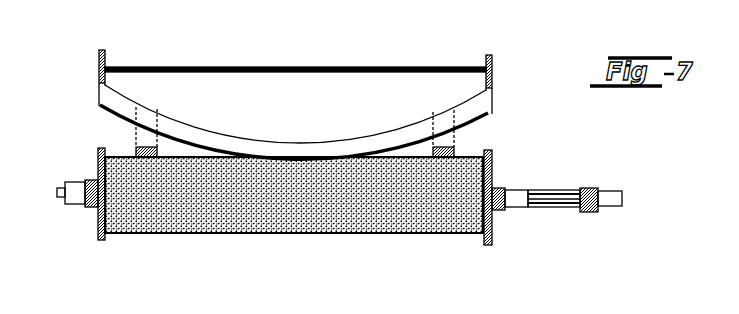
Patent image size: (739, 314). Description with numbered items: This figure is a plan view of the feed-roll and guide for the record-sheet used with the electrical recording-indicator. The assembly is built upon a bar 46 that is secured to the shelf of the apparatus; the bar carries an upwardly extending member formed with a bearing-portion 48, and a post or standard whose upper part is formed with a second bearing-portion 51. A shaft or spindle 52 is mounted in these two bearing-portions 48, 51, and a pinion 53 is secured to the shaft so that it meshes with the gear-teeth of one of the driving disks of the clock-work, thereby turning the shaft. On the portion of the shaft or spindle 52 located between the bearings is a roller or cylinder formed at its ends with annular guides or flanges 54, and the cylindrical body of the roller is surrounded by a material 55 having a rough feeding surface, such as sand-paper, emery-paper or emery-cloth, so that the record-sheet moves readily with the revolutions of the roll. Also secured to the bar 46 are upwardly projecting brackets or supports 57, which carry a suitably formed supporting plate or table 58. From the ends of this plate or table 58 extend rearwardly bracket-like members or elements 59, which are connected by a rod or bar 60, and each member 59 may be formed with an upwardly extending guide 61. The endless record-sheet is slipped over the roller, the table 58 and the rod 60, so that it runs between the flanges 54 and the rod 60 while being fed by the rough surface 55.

The bar 46 is at (607, 203).
The bearing-portion 48 is at (78, 200).
The bearing-portion 51 is at (518, 204).
The shaft or spindle 52 is at (57, 192).
The pinion 53 is at (598, 192).
The annular guides or flanges 54 is at (102, 241).
The rough feeding surface material 55 is at (328, 232).
The brackets or supports 57 is at (143, 138).
The supporting plate or table 58 is at (327, 142).
The bracket-like members or elements 59 is at (100, 76).
The rod or bar 60 is at (327, 66).
The upwardly extending guide 61 is at (106, 53).